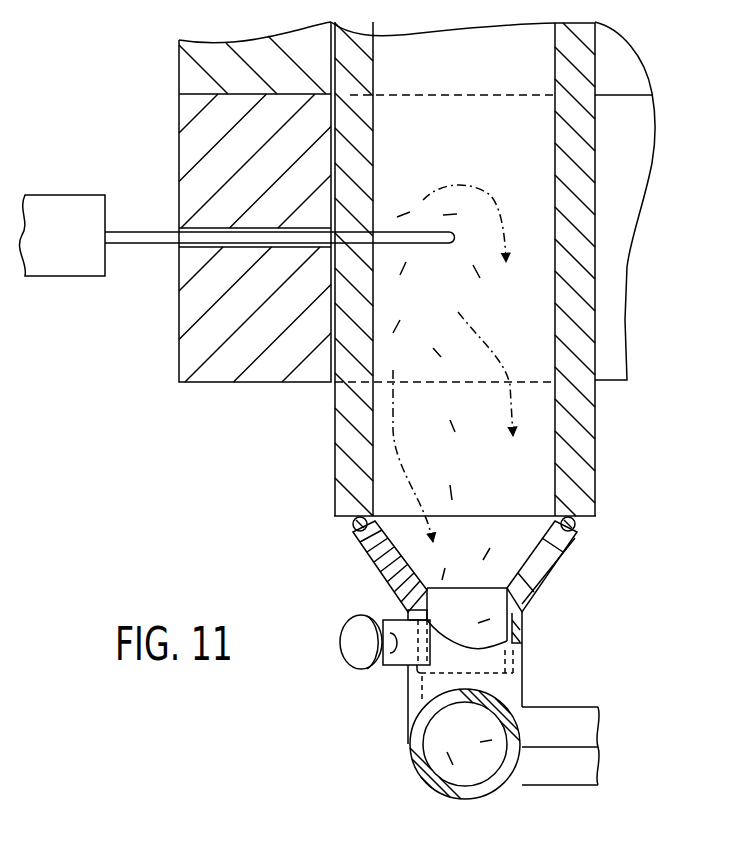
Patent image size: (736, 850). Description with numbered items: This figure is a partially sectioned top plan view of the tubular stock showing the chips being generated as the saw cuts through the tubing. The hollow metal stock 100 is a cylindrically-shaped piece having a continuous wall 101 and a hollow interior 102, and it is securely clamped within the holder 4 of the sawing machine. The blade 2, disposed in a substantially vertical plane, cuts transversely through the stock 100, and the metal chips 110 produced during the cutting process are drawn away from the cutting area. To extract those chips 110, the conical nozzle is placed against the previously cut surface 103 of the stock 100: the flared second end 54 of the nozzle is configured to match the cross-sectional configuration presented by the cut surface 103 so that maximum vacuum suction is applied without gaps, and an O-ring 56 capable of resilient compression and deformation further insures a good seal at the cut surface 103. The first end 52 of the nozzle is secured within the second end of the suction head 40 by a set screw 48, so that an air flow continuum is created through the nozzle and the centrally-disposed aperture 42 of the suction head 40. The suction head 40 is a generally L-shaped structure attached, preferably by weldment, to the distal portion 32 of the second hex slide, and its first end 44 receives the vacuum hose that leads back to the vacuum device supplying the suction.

The blade 2 is at (137, 248).
The holder 4 is at (258, 140).
The distal portion of the second hex slide 32 is at (541, 712).
The suction head 40 is at (411, 688).
The centrally-disposed aperture 42 is at (478, 767).
The first end of the suction head 44 is at (420, 773).
The set screw 48 is at (352, 645).
The first end of the nozzle 52 is at (524, 628).
The flared second end of the nozzle 54 is at (545, 565).
The O-ring 56 is at (582, 521).
The hollow metal stock 100 is at (595, 123).
The continuous wall 101 is at (596, 400).
The hollow interior 102 is at (489, 115).
The cut surface 103 is at (340, 521).
The metal chips 110 is at (495, 275).